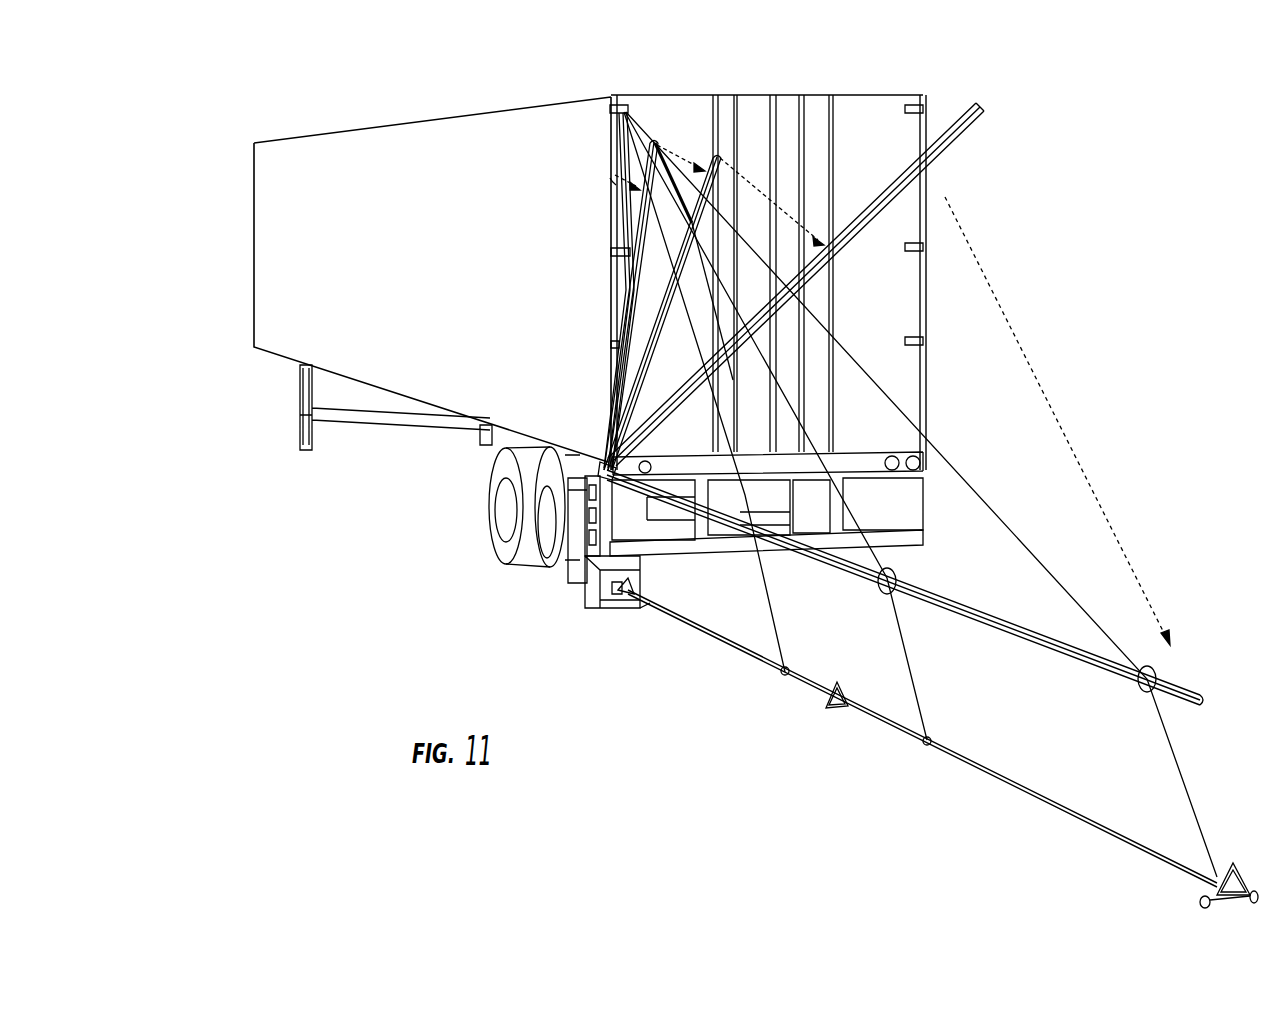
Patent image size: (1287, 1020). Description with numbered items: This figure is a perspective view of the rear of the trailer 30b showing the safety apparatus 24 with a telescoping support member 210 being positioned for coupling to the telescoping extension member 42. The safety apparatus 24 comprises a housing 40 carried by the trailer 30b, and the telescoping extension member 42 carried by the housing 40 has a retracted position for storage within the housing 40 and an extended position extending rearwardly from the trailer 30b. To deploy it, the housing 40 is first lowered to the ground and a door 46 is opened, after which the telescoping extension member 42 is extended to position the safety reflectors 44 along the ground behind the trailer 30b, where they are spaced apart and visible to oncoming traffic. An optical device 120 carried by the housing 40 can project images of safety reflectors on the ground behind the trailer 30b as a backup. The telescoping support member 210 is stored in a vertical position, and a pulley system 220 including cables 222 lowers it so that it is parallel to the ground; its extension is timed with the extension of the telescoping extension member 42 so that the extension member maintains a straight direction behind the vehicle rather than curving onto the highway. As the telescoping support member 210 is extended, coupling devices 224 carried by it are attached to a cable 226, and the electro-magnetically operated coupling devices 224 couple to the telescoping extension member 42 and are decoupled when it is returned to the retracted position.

The trailer 30b is at (395, 124).
The housing 40 is at (585, 581).
The safety apparatus 24 is at (566, 600).
The door 46 is at (610, 608).
The safety reflectors 44 is at (640, 589).
The optical device 120 is at (637, 562).
The pulley system 220 is at (609, 104).
The cables 222 is at (648, 129).
The telescoping support member 210 is at (611, 180).
The cable 226 is at (772, 617).
The telescoping extension member 42 is at (1034, 795).
The coupling devices 224 is at (650, 607).